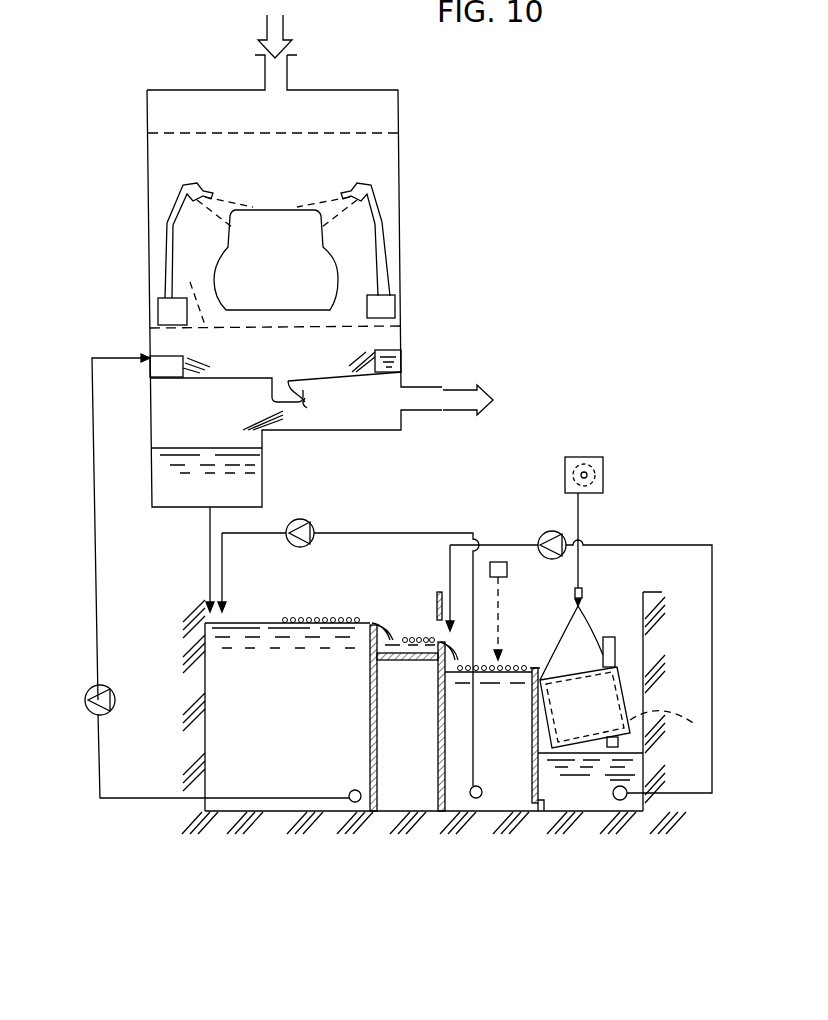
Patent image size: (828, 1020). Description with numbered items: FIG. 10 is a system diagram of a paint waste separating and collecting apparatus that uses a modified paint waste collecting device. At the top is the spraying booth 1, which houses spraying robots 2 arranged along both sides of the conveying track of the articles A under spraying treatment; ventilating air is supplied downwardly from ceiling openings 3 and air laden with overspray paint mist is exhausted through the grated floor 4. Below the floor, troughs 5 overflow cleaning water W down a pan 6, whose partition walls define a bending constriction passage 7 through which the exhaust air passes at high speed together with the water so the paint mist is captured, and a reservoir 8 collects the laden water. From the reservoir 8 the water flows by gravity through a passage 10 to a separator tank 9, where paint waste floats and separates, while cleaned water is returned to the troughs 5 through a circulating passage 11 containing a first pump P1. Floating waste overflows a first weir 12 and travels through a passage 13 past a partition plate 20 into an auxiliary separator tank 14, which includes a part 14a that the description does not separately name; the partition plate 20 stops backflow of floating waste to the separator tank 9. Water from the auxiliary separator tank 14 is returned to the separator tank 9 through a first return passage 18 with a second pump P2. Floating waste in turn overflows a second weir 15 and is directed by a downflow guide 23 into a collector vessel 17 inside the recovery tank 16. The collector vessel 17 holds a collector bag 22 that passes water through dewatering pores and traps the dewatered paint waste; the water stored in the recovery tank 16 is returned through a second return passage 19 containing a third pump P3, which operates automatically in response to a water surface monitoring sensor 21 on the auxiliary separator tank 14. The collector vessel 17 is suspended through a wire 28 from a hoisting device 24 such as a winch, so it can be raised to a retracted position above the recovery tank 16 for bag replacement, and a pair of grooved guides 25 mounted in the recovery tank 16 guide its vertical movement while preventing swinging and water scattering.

The spraying booth 1 is at (147, 153).
The spraying robots 2 is at (163, 223).
The ceiling openings 3 is at (358, 142).
The grated floor 4 is at (275, 292).
The troughs 5 is at (167, 376).
The pan 6 is at (225, 380).
The bending constriction passage 7 is at (316, 403).
The reservoir 8 is at (152, 465).
The separator tank 9 is at (228, 745).
The passage 10 is at (210, 553).
The circulating passage 11 is at (92, 578).
The first weir 12 is at (367, 643).
The passage 13 is at (402, 652).
The auxiliary separator tank 14 is at (500, 796).
The bottom opening 14a is at (552, 796).
The second weir 15 is at (488, 703).
The recovery tank 16 is at (592, 796).
The collector vessel 17 is at (630, 697).
The first return passage 18 is at (428, 528).
The second return passage 19 is at (713, 557).
The partition plate 20 is at (436, 600).
The water surface monitoring sensor 21 is at (493, 562).
The collector bag 22 is at (667, 732).
The downflow guide 23 is at (515, 705).
The hoisting device 24 is at (604, 482).
The grooved guides 25 is at (616, 645).
The wire 28 is at (580, 522).
The articles A is at (273, 208).
The cleaning water W is at (167, 488).
The first pump P1 is at (88, 695).
The second pump P2 is at (305, 522).
The third pump P3 is at (540, 540).